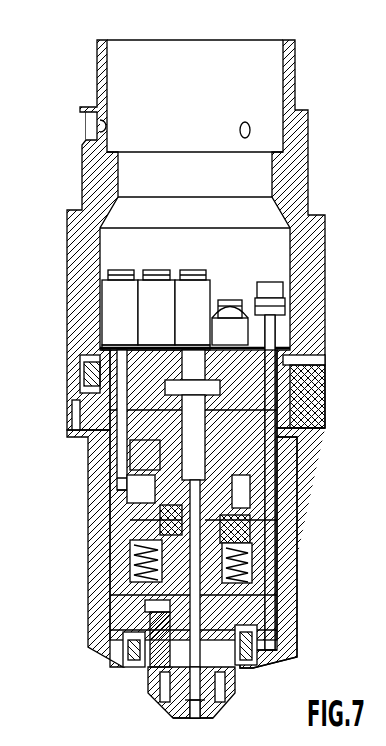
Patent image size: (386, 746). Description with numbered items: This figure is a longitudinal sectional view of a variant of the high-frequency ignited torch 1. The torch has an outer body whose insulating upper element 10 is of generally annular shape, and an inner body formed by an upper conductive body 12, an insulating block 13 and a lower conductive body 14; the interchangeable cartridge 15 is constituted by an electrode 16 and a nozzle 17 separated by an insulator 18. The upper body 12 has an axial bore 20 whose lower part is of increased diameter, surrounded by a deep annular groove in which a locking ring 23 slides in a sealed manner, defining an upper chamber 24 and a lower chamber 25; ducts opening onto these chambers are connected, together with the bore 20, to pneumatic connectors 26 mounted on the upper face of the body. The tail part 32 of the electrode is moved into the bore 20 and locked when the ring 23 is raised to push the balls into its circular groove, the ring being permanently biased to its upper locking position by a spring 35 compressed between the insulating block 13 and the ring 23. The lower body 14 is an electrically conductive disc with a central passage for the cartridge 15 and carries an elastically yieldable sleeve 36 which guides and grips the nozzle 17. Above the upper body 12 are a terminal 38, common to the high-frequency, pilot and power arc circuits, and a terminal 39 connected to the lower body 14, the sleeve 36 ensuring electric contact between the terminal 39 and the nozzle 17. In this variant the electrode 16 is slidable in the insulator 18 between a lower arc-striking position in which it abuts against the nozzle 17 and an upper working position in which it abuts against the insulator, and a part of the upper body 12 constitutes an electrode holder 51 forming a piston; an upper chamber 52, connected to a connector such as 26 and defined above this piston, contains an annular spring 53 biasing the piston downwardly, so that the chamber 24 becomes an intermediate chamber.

The torch 1 is at (70, 108).
The upper element 10 is at (82, 253).
The upper conductive body 12 is at (143, 400).
The insulating block 13 is at (145, 571).
The lower conductive body 14 is at (110, 615).
The interchangeable cartridge 15 is at (150, 712).
The electrode 16 is at (255, 648).
The nozzle 17 is at (233, 688).
The insulator 18 is at (142, 660).
The axial bore 20 is at (220, 397).
The locking ring 23 is at (248, 500).
The upper chamber 24 is at (145, 493).
The lower chamber 25 is at (245, 563).
The pneumatic connectors 26 is at (195, 292).
The tail part 32 is at (170, 518).
The spring 35 is at (243, 547).
The elastically yieldable sleeve 36 is at (133, 648).
The terminal 38 is at (222, 302).
The terminal 39 is at (270, 292).
The electrode holder 51 is at (160, 458).
The upper chamber 52 is at (290, 420).
The annular spring 53 is at (157, 432).